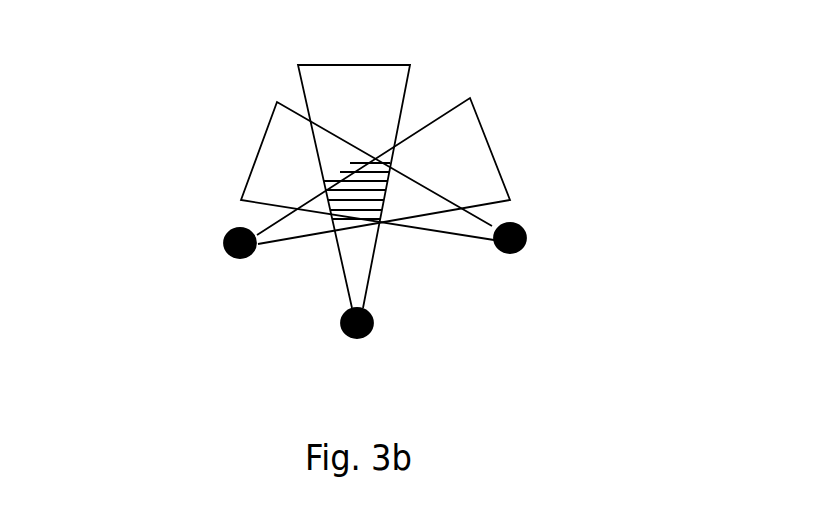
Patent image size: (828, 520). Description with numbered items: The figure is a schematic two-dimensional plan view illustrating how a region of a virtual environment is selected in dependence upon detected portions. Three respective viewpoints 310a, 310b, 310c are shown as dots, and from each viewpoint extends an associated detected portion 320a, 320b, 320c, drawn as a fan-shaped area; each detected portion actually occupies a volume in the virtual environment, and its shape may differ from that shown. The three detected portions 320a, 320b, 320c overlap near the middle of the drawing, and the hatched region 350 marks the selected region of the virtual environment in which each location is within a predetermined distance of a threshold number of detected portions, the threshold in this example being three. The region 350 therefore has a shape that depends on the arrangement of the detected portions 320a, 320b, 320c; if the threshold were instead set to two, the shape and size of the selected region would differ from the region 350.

The viewpoint 310a is at (226, 254).
The viewpoint 310b is at (373, 323).
The viewpoint 310c is at (526, 238).
The detected portion 320a is at (475, 137).
The detected portion 320b is at (325, 75).
The detected portion 320c is at (273, 165).
The region 350 is at (377, 173).